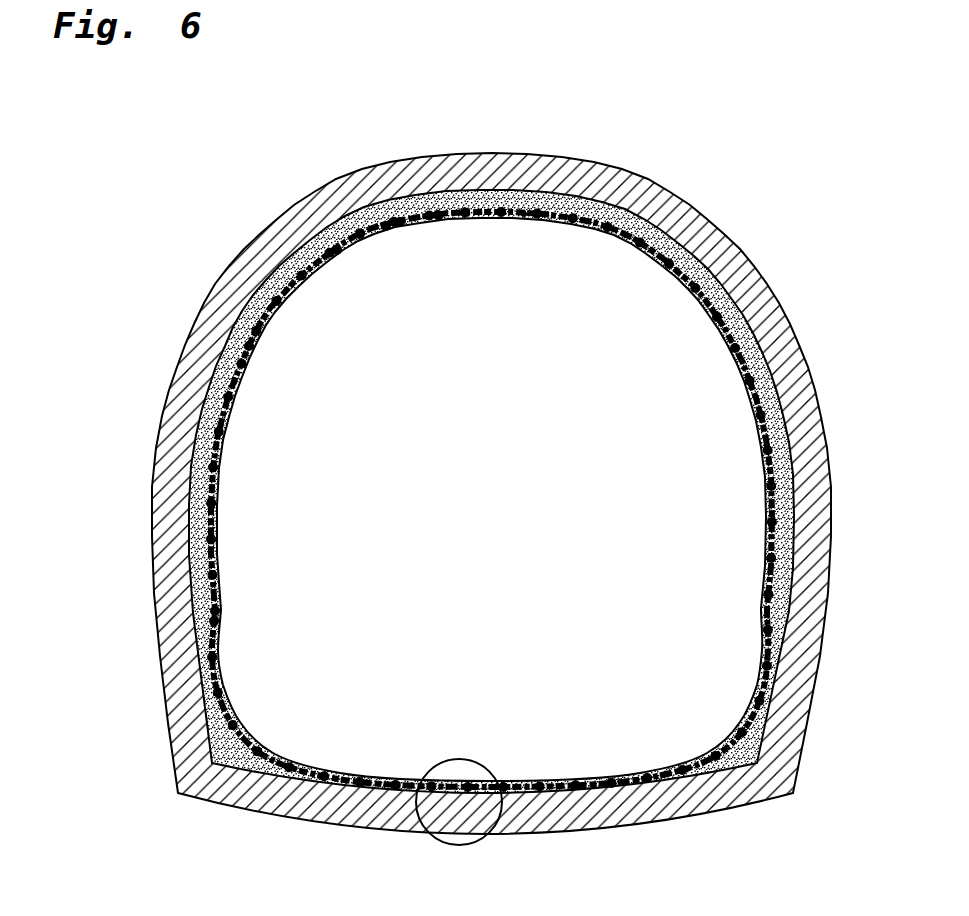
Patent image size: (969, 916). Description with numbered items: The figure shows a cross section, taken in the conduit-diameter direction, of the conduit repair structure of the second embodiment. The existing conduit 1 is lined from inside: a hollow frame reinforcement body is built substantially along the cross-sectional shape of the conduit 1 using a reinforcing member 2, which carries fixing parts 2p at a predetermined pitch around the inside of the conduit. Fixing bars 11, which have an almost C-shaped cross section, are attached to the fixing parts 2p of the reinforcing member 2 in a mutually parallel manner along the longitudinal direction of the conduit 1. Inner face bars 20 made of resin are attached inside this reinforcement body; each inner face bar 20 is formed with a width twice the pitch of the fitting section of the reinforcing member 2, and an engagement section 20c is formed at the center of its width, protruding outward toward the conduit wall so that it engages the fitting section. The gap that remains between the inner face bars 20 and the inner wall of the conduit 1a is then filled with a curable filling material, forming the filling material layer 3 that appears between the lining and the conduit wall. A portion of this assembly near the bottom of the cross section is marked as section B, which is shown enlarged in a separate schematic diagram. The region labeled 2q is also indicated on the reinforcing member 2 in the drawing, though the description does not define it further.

The existing conduit 1 is at (673, 225).
The inner wall of the conduit 1a is at (620, 192).
The reinforcing member 2 is at (534, 226).
The fixing parts 2p is at (524, 214).
The sheet portion 2q is at (440, 214).
The filling material layer 3 is at (320, 247).
The fixing bar 11 is at (314, 284).
The inner face bar 20 is at (438, 217).
The engagement section 20c is at (256, 342).
The section B is at (468, 758).